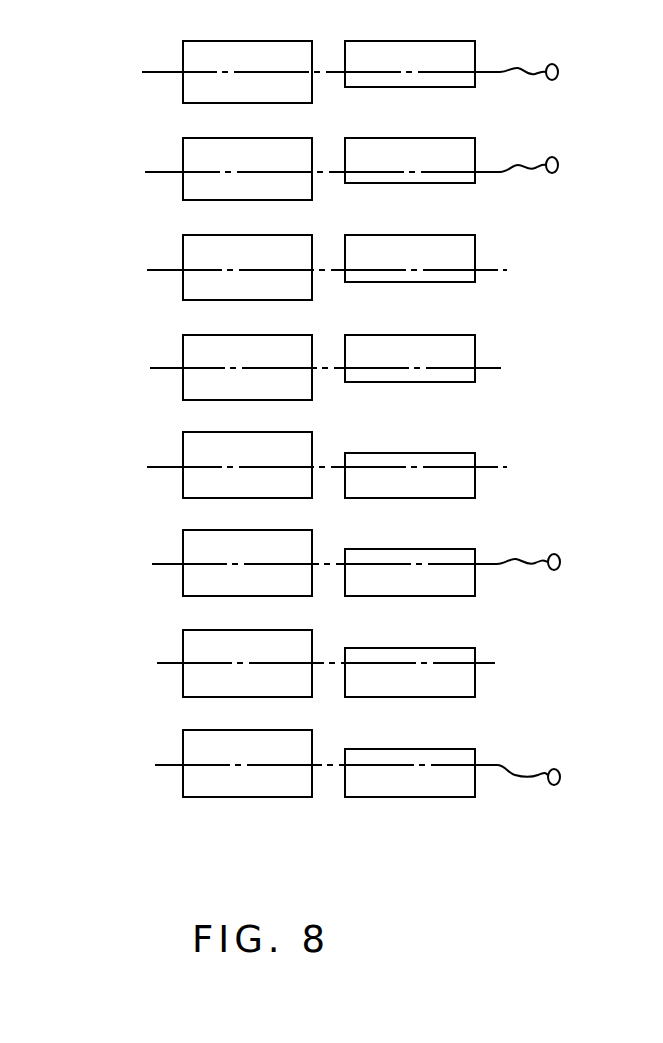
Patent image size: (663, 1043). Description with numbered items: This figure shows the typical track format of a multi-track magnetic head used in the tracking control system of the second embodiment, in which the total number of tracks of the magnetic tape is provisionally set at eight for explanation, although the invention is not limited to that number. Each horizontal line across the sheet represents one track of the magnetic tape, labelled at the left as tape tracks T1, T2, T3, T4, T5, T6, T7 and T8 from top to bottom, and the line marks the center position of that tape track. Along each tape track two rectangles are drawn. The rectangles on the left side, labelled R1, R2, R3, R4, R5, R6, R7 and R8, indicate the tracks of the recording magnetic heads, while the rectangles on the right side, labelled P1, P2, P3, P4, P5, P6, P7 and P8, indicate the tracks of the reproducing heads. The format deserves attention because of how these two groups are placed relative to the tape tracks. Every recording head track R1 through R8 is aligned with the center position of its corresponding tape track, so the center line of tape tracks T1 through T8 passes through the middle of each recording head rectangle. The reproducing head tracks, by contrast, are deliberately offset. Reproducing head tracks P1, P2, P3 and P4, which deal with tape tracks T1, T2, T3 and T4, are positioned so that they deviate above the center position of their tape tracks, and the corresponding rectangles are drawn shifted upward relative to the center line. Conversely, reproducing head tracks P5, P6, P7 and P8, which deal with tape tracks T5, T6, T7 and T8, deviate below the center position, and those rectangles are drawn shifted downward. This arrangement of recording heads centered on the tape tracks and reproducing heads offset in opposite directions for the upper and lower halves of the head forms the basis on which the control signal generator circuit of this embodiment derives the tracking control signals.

The track of the magnetic tape T1 is at (311, 73).
The track of the magnetic tape T2 is at (311, 166).
The track of the magnetic tape T3 is at (286, 266).
The track of the magnetic tape T4 is at (283, 367).
The track of the magnetic tape T5 is at (286, 466).
The track of the magnetic tape T6 is at (312, 563).
The track of the magnetic tape T7 is at (280, 669).
The track of the magnetic tape T8 is at (312, 774).
The track of the recording magnetic head R1 is at (224, 57).
The track of the recording magnetic head R2 is at (224, 162).
The track of the recording magnetic head R3 is at (224, 260).
The track of the recording magnetic head R4 is at (224, 360).
The track of the recording magnetic head R5 is at (224, 458).
The track of the recording magnetic head R6 is at (224, 557).
The track of the recording magnetic head R7 is at (224, 657).
The track of the recording magnetic head R8 is at (224, 759).
The track of the reproducing head P1 is at (428, 49).
The track of the reproducing head P2 is at (428, 153).
The track of the reproducing head P3 is at (428, 252).
The track of the reproducing head P4 is at (428, 353).
The track of the reproducing head P5 is at (428, 459).
The track of the reproducing head P6 is at (428, 557).
The track of the reproducing head P7 is at (428, 657).
The track of the reproducing head P8 is at (428, 760).